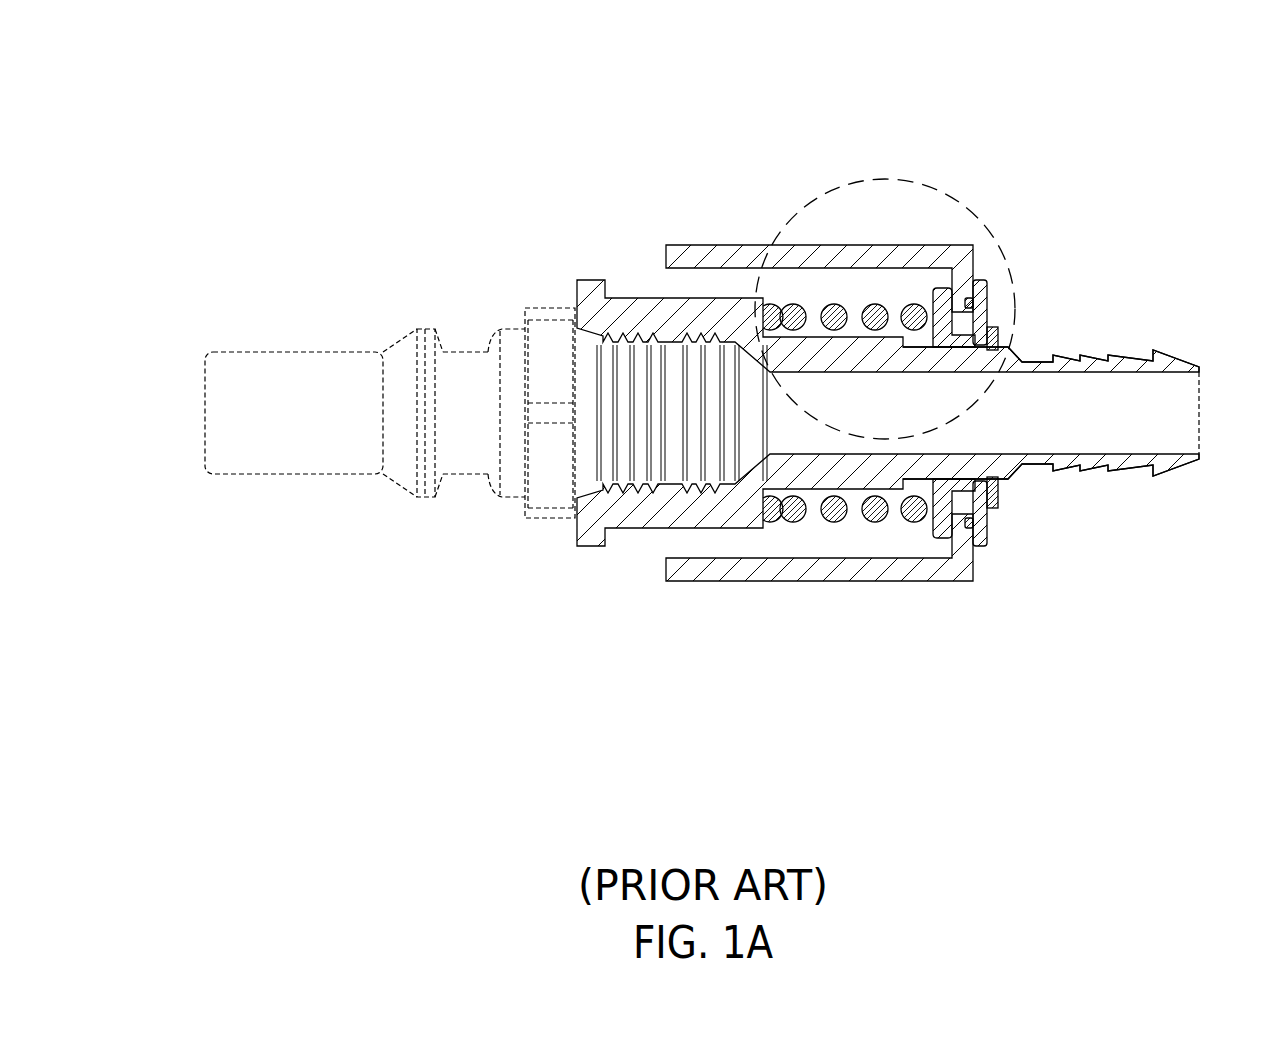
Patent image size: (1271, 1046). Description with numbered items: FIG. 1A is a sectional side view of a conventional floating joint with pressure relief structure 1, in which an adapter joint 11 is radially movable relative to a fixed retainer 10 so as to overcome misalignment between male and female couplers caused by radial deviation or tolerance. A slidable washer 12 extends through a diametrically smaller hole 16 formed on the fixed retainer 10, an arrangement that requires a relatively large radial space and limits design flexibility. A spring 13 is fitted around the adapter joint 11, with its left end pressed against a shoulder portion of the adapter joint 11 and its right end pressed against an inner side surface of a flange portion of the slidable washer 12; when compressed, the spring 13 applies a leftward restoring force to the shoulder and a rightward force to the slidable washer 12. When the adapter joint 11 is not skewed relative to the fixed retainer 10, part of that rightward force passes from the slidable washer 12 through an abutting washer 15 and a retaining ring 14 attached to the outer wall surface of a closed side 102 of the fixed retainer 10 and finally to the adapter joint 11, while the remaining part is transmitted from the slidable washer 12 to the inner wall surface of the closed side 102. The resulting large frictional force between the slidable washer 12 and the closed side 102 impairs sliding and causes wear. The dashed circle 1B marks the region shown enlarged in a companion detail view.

The floating joint with pressure relief structure 1 is at (121, 74).
The fixed retainer 10 is at (785, 583).
The adapter joint 11 is at (597, 280).
The slidable washer 12 is at (943, 538).
The spring 13 is at (838, 304).
The retaining ring 14 is at (1003, 340).
The abutting washer 15 is at (974, 302).
The diametrically smaller hole 16 is at (990, 503).
The closed side 102 is at (977, 560).
The detail region 1B is at (800, 200).